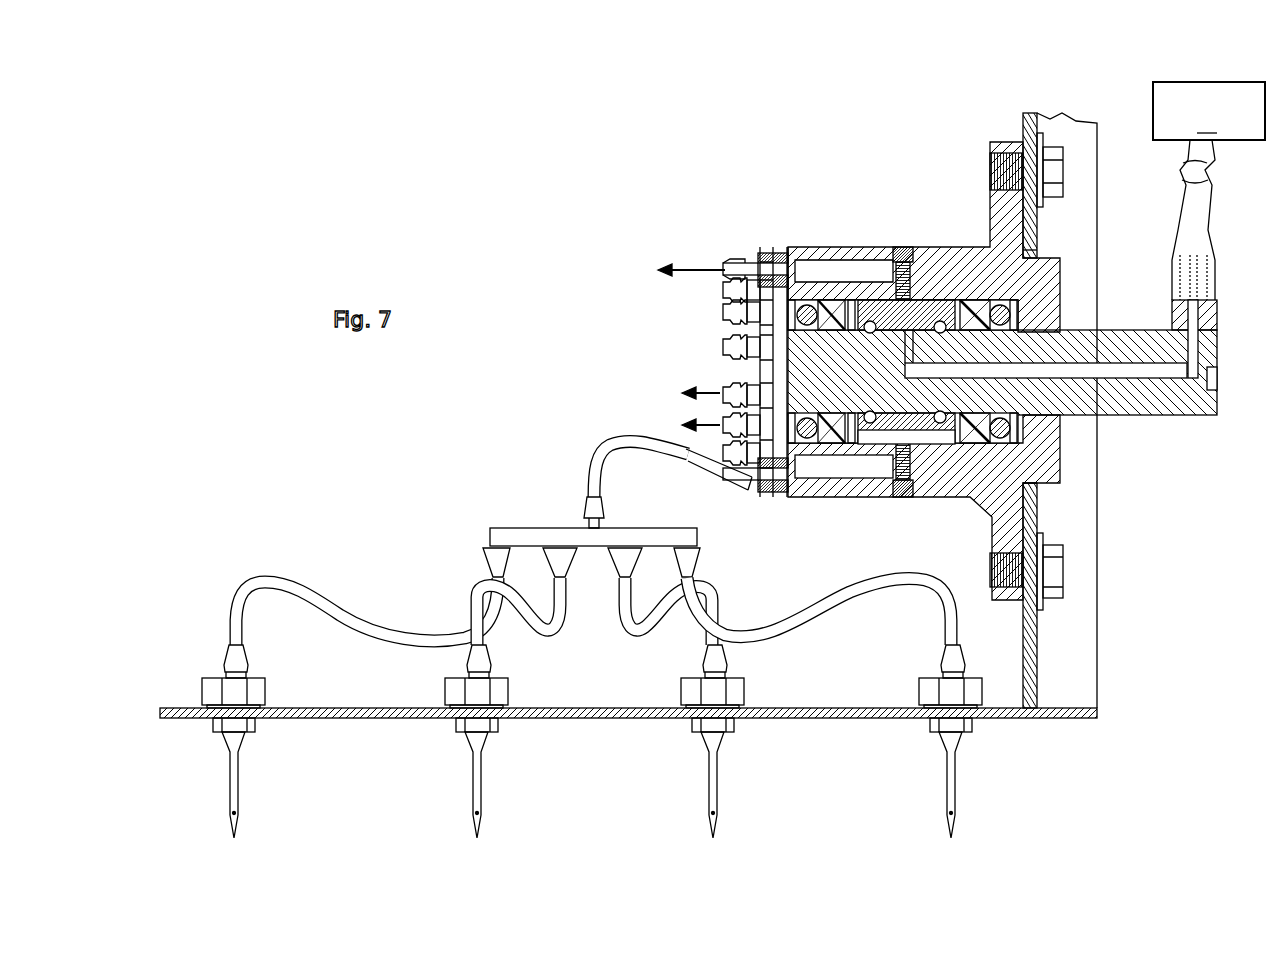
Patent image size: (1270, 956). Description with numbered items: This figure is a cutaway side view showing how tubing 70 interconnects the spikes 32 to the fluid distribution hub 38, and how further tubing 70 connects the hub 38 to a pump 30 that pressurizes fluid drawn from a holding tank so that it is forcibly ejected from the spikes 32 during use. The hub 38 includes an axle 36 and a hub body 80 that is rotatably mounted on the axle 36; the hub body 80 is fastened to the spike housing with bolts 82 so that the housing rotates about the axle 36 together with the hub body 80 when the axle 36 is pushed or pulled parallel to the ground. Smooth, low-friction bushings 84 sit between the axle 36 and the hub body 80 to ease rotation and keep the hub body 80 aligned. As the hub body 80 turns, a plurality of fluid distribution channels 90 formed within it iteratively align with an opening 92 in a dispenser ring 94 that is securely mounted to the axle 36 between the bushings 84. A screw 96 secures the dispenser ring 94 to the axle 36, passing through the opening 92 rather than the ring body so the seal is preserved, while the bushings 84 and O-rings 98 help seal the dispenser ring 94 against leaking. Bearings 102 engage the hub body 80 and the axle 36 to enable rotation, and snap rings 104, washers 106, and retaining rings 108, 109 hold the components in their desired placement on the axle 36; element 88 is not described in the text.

The pump 30 is at (1209, 111).
The spikes 32 is at (473, 785).
The axle 36 is at (752, 360).
The fluid distribution hub 38 is at (800, 245).
The tubing 70 is at (1196, 224).
The hub body 80 is at (1030, 250).
The bolts 82 is at (1060, 172).
The bushings 84 is at (803, 300).
The shaft 88 is at (1040, 330).
The fluid distribution channels 90 is at (838, 282).
The opening 92 is at (925, 478).
The dispenser ring 94 is at (876, 300).
The screw 96 is at (900, 490).
The O-rings 98 is at (868, 300).
The bearings 102 is at (812, 300).
The snap rings 104 is at (855, 300).
The washers 106 is at (850, 305).
The retaining ring 108 is at (793, 262).
The retaining ring 109 is at (778, 255).